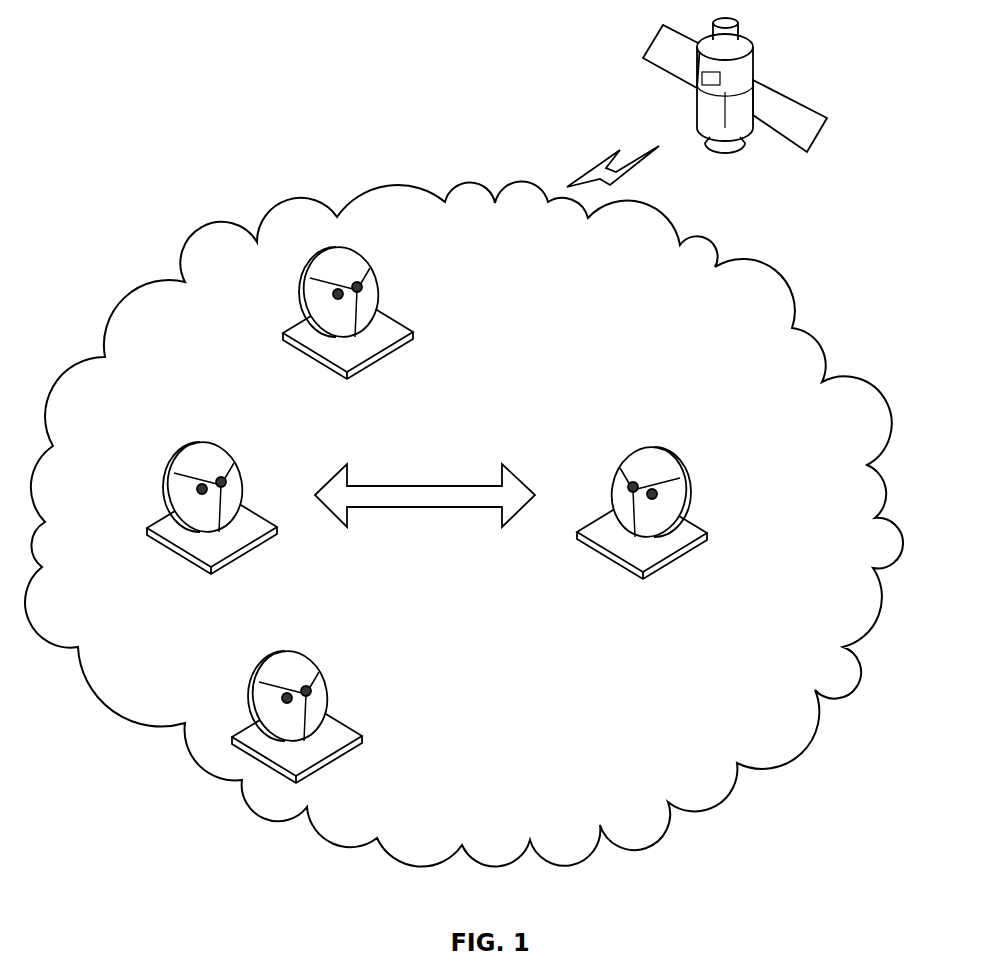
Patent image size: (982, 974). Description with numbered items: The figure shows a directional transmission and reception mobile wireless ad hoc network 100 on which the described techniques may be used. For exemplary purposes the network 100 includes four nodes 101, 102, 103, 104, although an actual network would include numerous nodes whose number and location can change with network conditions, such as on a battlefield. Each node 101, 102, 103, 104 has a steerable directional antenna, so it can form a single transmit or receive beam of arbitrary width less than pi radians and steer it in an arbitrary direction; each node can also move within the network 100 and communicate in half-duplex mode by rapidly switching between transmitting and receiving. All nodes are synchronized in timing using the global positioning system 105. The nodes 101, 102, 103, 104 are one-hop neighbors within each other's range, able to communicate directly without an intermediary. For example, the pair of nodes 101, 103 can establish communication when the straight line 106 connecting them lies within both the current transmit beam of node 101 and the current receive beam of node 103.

The mobile wireless ad hoc network 100 is at (130, 213).
The node 101 is at (715, 558).
The node 102 is at (318, 778).
The node 103 is at (152, 498).
The node 104 is at (375, 250).
The global positioning system 105 is at (813, 90).
The straight line 106 is at (392, 480).